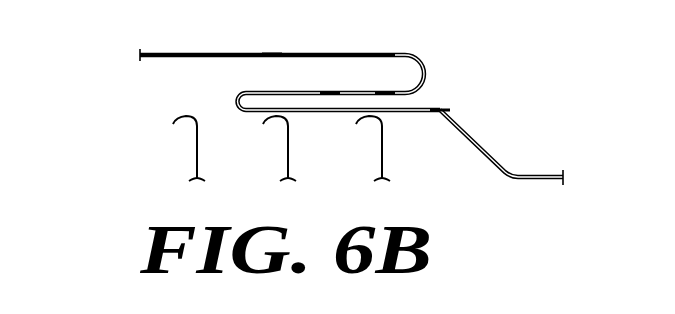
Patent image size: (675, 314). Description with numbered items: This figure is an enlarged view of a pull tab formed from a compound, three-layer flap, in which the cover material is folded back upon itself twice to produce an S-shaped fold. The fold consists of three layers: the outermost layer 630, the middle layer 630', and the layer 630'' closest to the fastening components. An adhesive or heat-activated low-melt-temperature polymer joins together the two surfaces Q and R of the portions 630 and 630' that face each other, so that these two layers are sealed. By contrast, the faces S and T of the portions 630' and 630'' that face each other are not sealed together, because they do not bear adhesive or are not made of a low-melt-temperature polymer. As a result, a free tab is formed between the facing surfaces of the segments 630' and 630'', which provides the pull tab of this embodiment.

The outermost layer 630 is at (282, 56).
The middle layer 630' is at (303, 98).
The layer closest to the fastening components 630'' is at (501, 140).
The surface Q is at (271, 58).
The surface R is at (327, 92).
The face S is at (382, 98).
The face T is at (438, 109).